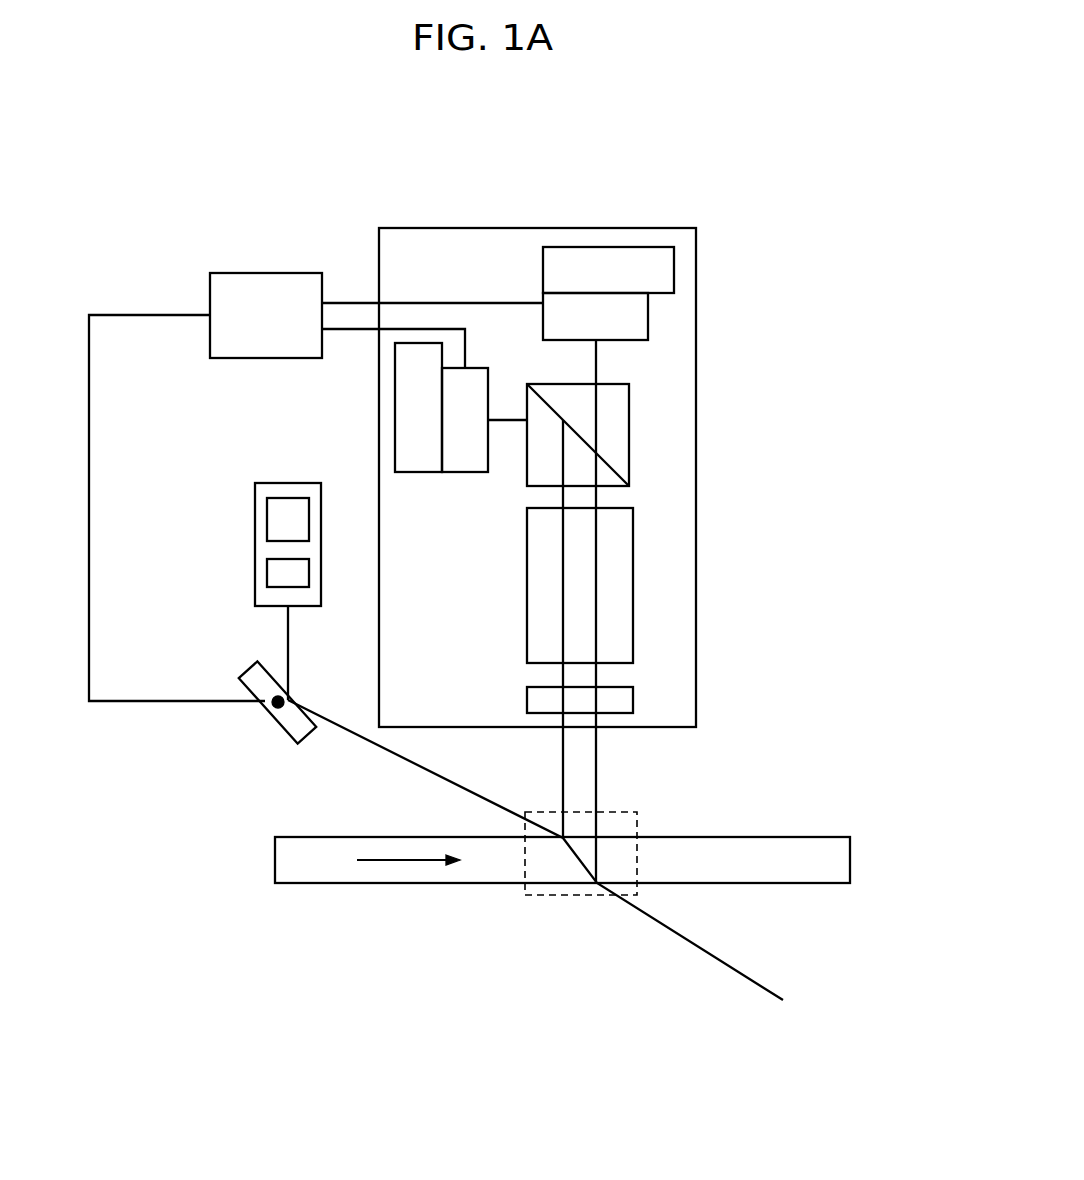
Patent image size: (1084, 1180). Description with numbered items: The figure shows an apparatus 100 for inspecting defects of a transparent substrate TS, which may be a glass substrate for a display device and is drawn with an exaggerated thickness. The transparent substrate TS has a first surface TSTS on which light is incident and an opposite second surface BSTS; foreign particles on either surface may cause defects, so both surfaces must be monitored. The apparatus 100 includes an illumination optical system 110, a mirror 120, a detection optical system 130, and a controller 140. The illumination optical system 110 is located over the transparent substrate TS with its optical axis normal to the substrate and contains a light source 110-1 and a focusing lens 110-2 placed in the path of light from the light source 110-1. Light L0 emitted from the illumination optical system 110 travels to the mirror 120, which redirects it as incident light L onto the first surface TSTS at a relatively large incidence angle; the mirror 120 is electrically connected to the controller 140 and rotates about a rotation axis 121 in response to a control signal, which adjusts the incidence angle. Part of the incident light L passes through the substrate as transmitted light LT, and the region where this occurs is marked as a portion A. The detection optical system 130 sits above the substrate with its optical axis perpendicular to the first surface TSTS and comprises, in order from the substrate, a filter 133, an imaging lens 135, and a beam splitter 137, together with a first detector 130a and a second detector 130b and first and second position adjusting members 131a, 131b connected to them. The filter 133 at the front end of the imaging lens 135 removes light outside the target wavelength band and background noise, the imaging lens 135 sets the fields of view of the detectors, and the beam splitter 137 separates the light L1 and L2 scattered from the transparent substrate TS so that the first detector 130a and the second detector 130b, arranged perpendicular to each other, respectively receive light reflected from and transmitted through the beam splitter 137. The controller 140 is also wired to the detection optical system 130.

The apparatus 100 is at (682, 137).
The illumination optical system 110 is at (168, 513).
The light source 110-1 is at (267, 519).
The focusing lens 110-2 is at (267, 571).
The mirror 120 is at (280, 730).
The rotation axis 121 is at (270, 706).
The detection optical system 130 is at (537, 228).
The first detector 130a is at (470, 472).
The second detector 130b is at (648, 318).
The first position adjusting member 131a is at (413, 472).
The second position adjusting member 131b is at (674, 270).
The filter 133 is at (633, 702).
The imaging lens 135 is at (633, 582).
The beam splitter 137 is at (629, 436).
The controller 140 is at (266, 273).
The incident light L is at (413, 765).
The light L0 is at (288, 633).
The light L1 is at (563, 757).
The light L2 is at (596, 757).
The transmitted light LT is at (578, 862).
The transparent substrate TS is at (850, 860).
The first surface TSTS is at (820, 837).
The second surface BSTS is at (820, 883).
The portion A is at (525, 858).